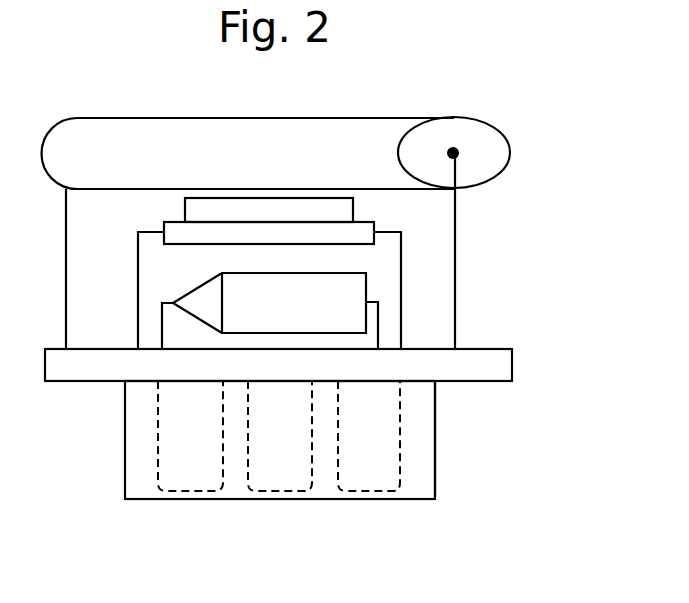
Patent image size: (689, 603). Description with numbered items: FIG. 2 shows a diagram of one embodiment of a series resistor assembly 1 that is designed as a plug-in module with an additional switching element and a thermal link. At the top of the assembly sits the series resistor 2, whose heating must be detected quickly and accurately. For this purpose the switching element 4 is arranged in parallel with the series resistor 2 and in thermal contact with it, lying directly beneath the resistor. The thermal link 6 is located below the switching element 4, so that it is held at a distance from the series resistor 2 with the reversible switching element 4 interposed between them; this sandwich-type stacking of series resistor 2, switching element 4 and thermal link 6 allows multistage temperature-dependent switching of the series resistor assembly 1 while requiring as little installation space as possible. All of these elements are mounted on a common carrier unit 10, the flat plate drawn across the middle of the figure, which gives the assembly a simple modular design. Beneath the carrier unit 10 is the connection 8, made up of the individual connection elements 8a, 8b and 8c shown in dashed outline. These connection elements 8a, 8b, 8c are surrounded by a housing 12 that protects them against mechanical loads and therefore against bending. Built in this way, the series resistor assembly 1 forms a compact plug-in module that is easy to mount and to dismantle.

The series resistor assembly 1 is at (416, 88).
The series resistor 2 is at (492, 143).
The switching element 4 is at (347, 208).
The thermal link 6 is at (366, 289).
The connection 8 is at (427, 461).
The connection element 8a is at (192, 475).
The connection element 8b is at (280, 475).
The connection element 8c is at (368, 475).
The carrier unit 10 is at (512, 365).
The housing 12 is at (435, 428).